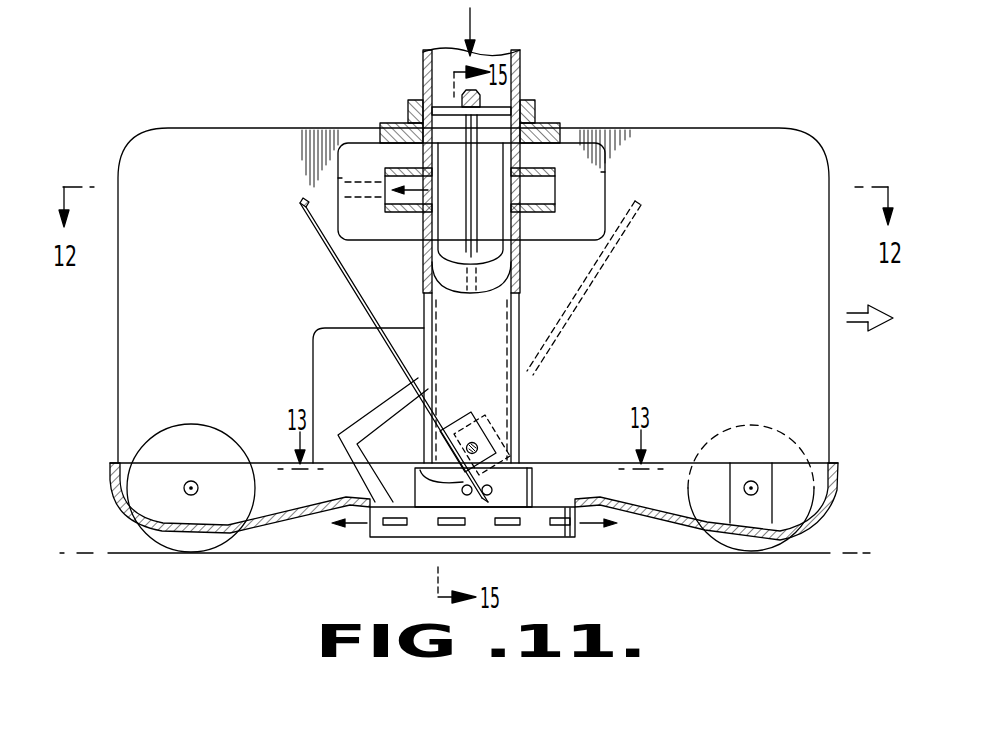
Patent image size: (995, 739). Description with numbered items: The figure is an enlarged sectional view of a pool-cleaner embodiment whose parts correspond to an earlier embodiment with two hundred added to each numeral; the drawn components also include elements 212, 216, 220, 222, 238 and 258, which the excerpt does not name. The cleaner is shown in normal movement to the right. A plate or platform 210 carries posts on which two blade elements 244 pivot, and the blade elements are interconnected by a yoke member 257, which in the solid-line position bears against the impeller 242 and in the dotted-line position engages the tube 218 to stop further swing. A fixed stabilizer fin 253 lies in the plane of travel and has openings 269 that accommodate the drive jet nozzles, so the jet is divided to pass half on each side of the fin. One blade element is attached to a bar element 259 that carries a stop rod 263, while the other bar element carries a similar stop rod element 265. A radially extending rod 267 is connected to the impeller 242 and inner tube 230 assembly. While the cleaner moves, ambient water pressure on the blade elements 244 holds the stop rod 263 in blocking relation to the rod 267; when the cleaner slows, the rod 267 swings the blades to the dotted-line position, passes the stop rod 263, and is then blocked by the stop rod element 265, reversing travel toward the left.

The plate or platform 210 is at (298, 520).
The flexible strap right portion 212 is at (783, 543).
The mounting flange 216 is at (535, 107).
The tube 218 is at (520, 68).
The enclosure housing 220 is at (380, 163).
The right nozzle port 222 is at (552, 168).
The inner tube 230 is at (510, 243).
The left nozzle port 238 is at (425, 197).
The impeller 242 is at (540, 530).
The blade elements 244 is at (303, 213).
The stabilizer fin 253 is at (215, 133).
The yoke member 257 is at (389, 400).
The slots 258 is at (445, 525).
The bar element 259 is at (468, 413).
The stop rod 263 is at (426, 469).
The stop rod element 265 is at (522, 462).
The radially extending rod 267 is at (492, 490).
The openings 269 is at (338, 178).